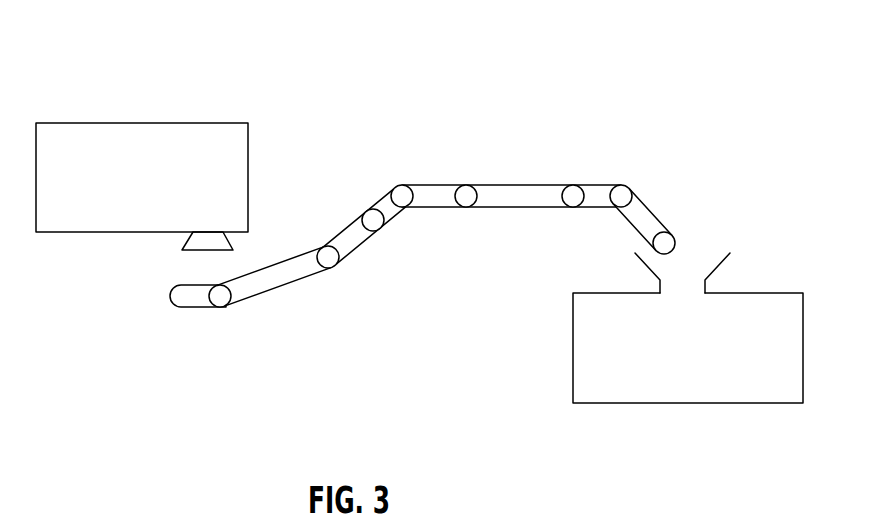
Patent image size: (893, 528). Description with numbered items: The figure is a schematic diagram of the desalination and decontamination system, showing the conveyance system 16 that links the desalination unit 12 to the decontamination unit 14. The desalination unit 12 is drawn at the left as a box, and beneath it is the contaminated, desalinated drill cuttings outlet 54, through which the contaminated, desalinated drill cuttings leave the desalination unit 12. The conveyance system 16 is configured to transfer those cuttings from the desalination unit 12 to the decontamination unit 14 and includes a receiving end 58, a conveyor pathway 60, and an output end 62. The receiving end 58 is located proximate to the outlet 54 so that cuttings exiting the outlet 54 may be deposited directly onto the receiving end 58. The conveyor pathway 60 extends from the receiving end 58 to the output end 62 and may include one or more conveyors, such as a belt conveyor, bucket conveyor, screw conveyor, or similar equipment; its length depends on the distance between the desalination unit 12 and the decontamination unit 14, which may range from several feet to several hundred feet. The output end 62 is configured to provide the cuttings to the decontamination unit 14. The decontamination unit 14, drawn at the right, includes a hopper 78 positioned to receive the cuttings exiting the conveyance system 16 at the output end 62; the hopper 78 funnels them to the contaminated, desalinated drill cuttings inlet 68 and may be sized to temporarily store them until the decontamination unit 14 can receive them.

The desalination unit 12 is at (100, 122).
The decontamination unit 14 is at (755, 293).
The conveyance system 16 is at (689, 71).
The contaminated, desalinated drill cuttings outlet 54 is at (232, 243).
The receiving end 58 is at (200, 307).
The conveyor pathway 60 is at (434, 243).
The output end 62 is at (647, 197).
The contaminated, desalinated drill cuttings inlet 68 is at (685, 300).
The hopper 78 is at (638, 258).